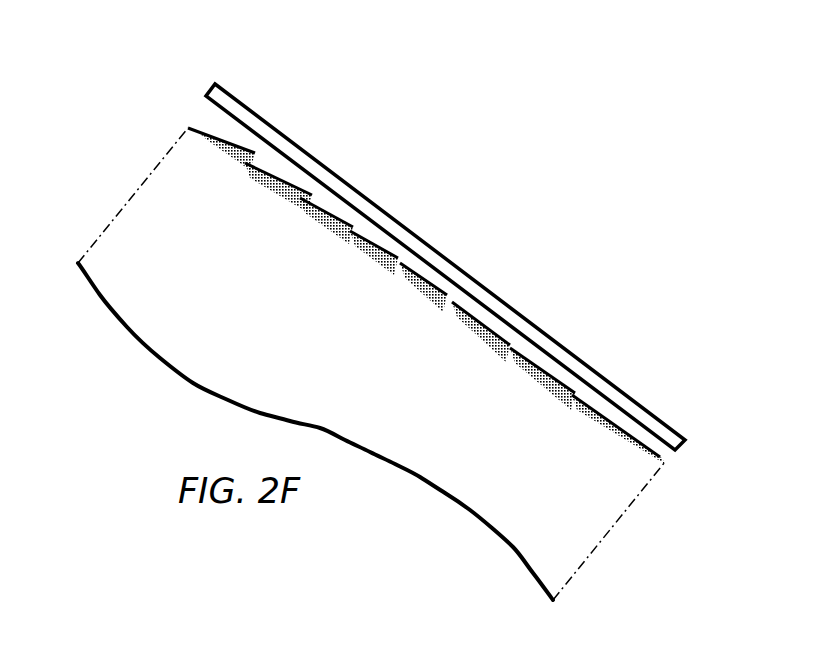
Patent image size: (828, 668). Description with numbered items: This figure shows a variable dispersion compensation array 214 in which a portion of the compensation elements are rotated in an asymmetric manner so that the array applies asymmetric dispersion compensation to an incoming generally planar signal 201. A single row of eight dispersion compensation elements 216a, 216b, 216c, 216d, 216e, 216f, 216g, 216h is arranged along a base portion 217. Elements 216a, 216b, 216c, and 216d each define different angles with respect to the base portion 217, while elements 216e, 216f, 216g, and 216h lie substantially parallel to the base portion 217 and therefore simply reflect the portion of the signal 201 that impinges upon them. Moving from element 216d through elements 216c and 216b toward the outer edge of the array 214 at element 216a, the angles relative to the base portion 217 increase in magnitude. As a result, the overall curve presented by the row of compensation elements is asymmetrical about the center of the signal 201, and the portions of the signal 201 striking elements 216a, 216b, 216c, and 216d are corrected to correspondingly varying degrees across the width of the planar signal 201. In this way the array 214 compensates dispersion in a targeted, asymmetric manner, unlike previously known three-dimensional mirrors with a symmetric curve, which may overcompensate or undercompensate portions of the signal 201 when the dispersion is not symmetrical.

The generally planar signal 201 is at (127, 262).
The variable dispersion compensation array 214 is at (558, 258).
The base portion 217 is at (222, 86).
The dispersion compensation element 216a is at (217, 147).
The dispersion compensation element 216b is at (270, 186).
The dispersion compensation element 216c is at (333, 227).
The dispersion compensation element 216d is at (390, 272).
The dispersion compensation element 216e is at (453, 316).
The dispersion compensation element 216f is at (513, 362).
The dispersion compensation element 216g is at (570, 400).
The dispersion compensation element 216h is at (630, 447).